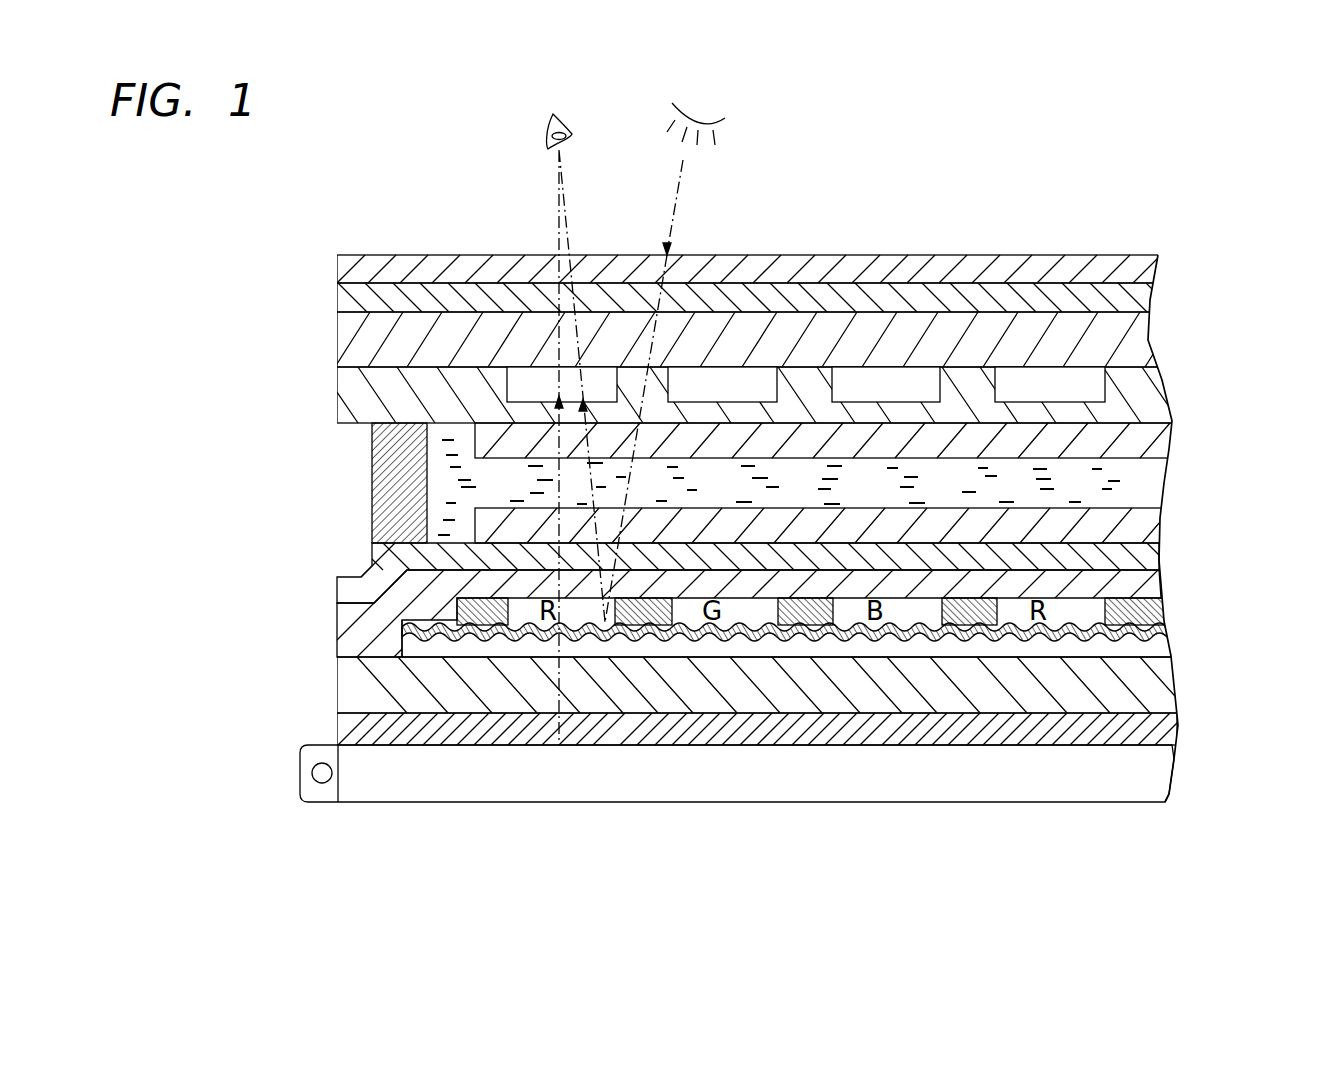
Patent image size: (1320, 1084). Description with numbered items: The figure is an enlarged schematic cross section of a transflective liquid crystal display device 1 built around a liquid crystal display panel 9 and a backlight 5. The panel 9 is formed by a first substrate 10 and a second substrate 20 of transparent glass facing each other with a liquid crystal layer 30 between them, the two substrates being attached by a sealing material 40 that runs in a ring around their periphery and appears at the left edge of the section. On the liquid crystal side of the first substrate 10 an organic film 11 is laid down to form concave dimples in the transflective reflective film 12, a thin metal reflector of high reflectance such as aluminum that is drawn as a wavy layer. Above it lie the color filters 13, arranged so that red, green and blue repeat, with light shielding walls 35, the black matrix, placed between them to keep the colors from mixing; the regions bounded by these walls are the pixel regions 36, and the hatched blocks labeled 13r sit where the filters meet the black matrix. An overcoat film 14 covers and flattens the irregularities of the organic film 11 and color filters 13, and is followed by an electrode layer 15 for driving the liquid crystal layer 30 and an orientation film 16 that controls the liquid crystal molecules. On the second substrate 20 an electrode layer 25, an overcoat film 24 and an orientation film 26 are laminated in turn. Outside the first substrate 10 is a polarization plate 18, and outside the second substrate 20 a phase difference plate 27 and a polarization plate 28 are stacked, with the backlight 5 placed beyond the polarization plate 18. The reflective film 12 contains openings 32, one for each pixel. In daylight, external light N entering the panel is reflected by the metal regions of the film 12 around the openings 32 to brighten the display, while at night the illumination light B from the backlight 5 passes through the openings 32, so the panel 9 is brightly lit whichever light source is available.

The liquid crystal display device 1 is at (1133, 820).
The backlight 5 is at (375, 790).
The liquid crystal display panel 9 is at (325, 362).
The first substrate 10 is at (1165, 690).
The organic film 11 is at (1168, 651).
The transflective reflective film 12 is at (1170, 631).
The color filters 13 is at (970, 835).
The light shielding portion 13r is at (516, 605).
The overcoat film 14 is at (1152, 578).
The electrode layer 15 is at (1150, 548).
The orientation film 16 is at (1145, 520).
The polarization plate 18 is at (1165, 735).
The second substrate 20 is at (1137, 347).
The overcoat film 24 is at (1143, 398).
The electrode layer 25 is at (1040, 378).
The orientation film 26 is at (1150, 440).
The phase difference plate 27 is at (1133, 297).
The polarization plate 28 is at (1160, 268).
The liquid crystal layer 30 is at (1165, 475).
The openings 32 is at (1090, 822).
The light shielding walls 35 is at (1015, 835).
The pixel regions 36 is at (1063, 600).
The sealing material 40 is at (385, 462).
The illumination light B is at (558, 225).
The external light N is at (683, 192).